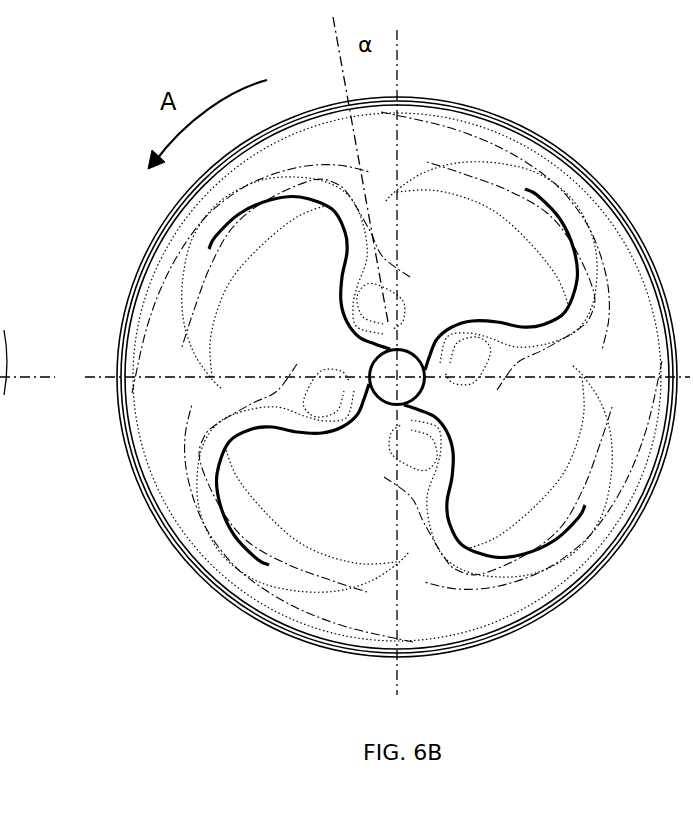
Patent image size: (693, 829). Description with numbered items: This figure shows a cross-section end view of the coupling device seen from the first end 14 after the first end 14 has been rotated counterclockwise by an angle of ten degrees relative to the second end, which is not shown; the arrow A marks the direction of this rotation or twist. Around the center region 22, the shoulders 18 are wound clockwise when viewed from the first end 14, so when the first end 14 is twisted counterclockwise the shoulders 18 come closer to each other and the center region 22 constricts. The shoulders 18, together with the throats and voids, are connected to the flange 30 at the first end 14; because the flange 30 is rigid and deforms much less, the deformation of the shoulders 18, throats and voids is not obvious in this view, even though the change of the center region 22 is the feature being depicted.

The first end 14 is at (347, 622).
The shoulders 18 is at (245, 221).
The center region 22 is at (397, 377).
The flange 30 is at (168, 534).